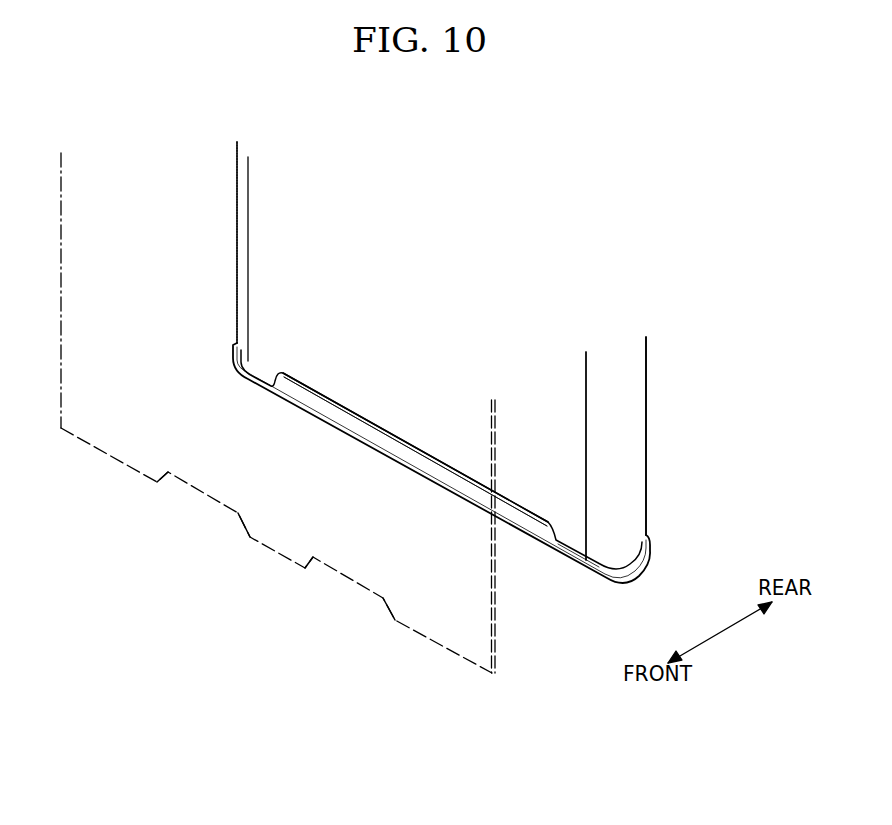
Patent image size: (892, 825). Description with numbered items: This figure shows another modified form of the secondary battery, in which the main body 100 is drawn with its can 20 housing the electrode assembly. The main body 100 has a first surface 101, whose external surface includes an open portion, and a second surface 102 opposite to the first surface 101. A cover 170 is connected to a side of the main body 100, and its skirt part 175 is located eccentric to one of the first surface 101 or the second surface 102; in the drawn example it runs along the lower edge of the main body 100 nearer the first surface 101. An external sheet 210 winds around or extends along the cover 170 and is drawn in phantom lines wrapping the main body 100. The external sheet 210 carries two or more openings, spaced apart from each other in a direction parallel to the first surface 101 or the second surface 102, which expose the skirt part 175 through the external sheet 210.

The can 20 is at (638, 363).
The main body 100 is at (625, 478).
The first surface 101 is at (586, 432).
The second surface 102 is at (646, 410).
The cover 170 is at (658, 548).
The skirt part 175 is at (532, 522).
The external sheet 210 is at (423, 634).